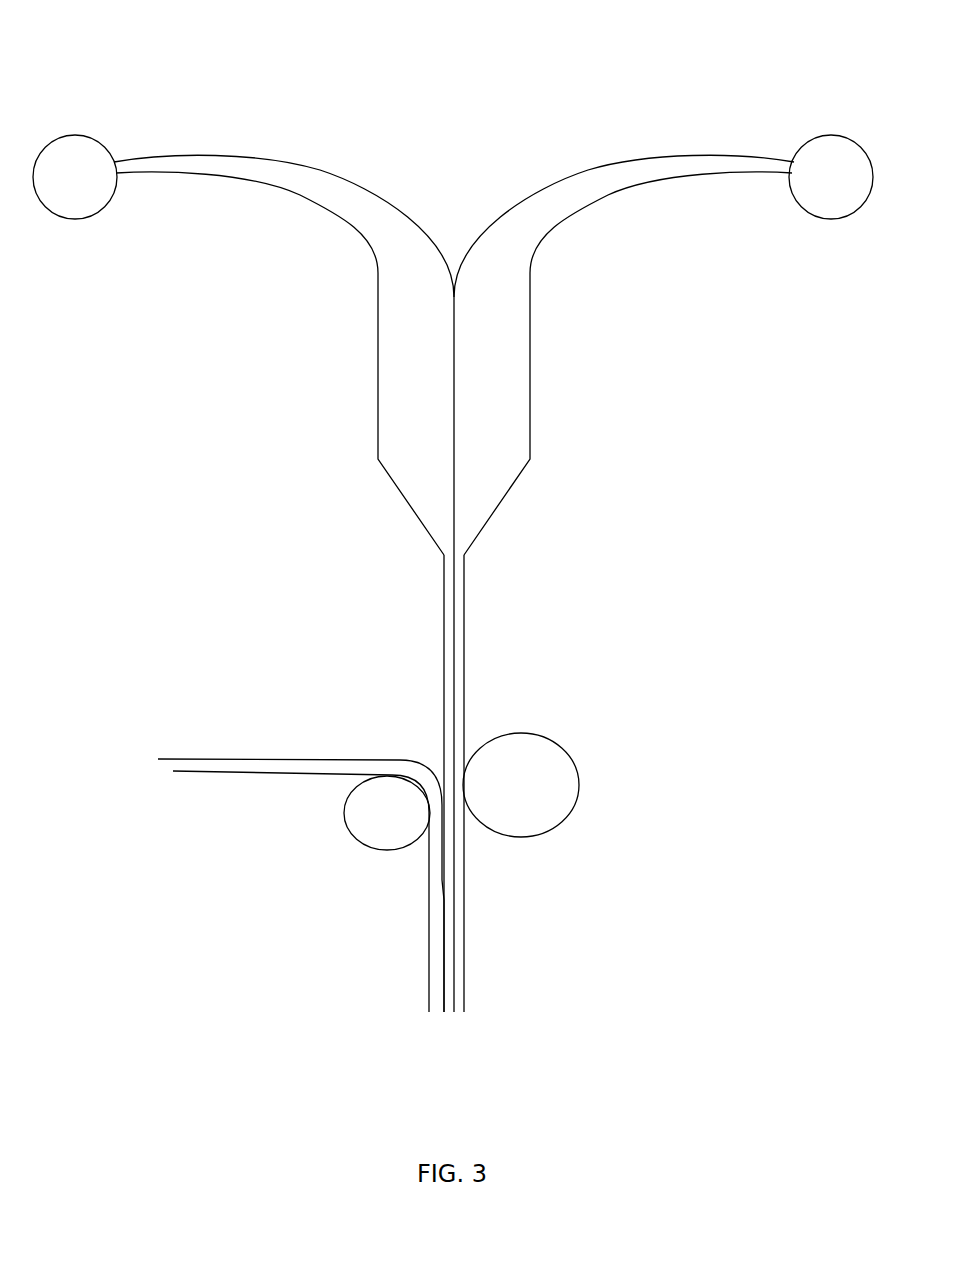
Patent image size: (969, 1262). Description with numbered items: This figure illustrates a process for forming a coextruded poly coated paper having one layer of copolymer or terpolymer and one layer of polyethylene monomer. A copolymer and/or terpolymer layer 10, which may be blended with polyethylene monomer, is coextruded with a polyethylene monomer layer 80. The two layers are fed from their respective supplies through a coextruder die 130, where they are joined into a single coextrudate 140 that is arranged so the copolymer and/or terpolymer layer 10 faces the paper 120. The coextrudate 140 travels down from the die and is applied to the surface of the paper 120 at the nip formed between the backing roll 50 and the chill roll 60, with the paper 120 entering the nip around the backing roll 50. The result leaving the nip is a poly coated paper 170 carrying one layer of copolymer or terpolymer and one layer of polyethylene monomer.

The copolymer and/or terpolymer layer 10 is at (86, 134).
The polyethylene monomer layer 80 is at (814, 133).
The coextruder die 130 is at (530, 360).
The coextrudate 140 is at (452, 616).
The paper 120 is at (175, 765).
The backing roll 50 is at (349, 827).
The chill roll 60 is at (573, 758).
The poly coated paper 170 is at (448, 1012).